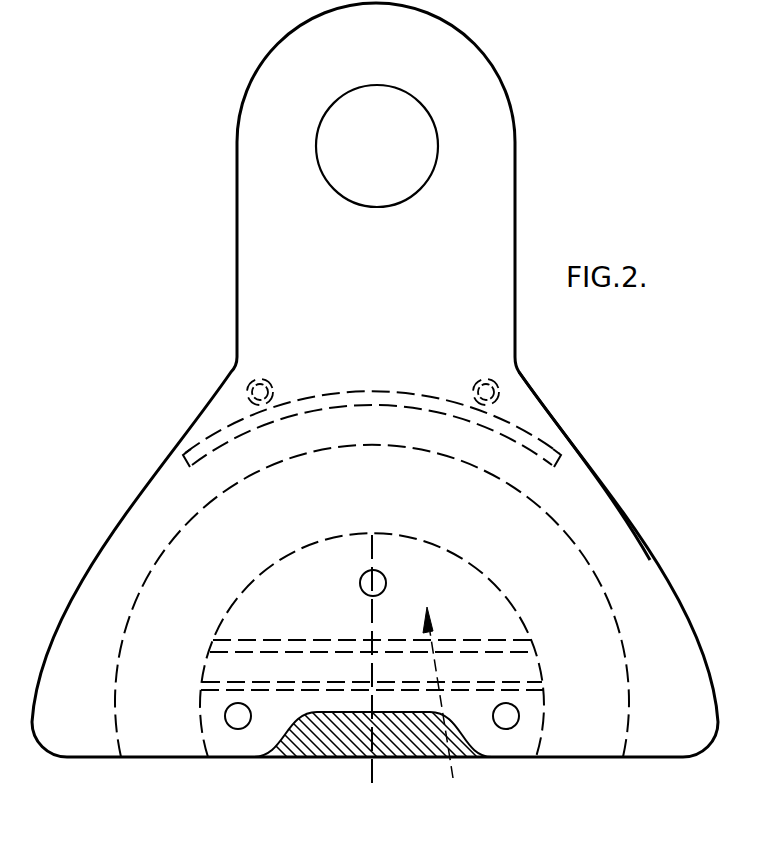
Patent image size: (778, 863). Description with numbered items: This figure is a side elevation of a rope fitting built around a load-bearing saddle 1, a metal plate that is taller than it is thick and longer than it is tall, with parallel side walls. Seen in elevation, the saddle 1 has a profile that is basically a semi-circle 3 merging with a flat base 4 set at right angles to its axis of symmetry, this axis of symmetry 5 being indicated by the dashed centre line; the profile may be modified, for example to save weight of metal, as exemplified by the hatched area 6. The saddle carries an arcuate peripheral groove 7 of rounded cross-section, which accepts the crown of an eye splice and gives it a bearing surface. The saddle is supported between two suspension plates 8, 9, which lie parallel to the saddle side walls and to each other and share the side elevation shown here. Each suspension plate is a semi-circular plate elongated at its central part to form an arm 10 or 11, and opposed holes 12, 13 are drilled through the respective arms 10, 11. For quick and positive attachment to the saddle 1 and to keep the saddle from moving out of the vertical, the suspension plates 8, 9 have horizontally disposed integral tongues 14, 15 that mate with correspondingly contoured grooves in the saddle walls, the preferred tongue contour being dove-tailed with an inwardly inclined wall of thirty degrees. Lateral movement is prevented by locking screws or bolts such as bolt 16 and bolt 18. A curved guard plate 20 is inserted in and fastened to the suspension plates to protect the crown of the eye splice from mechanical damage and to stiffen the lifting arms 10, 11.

The saddle 1 is at (441, 702).
The semi-circle 3 is at (561, 530).
The flat base 4 is at (309, 759).
The center axis 5 is at (370, 617).
The hatched area 6 is at (375, 748).
The arcuate peripheral groove 7 is at (603, 662).
The suspension plate 8 is at (584, 466).
The suspension plate 9 is at (577, 447).
The arm 10 is at (375, 380).
The arm 11 is at (487, 203).
The hole 12 is at (458, 142).
The hole 13 is at (427, 130).
The integral tongue 14 is at (345, 647).
The integral tongue 15 is at (233, 670).
The locking screw or bolt 16 is at (380, 571).
The locking screw or bolt 18 is at (236, 721).
The curved guard plate 20 is at (505, 421).